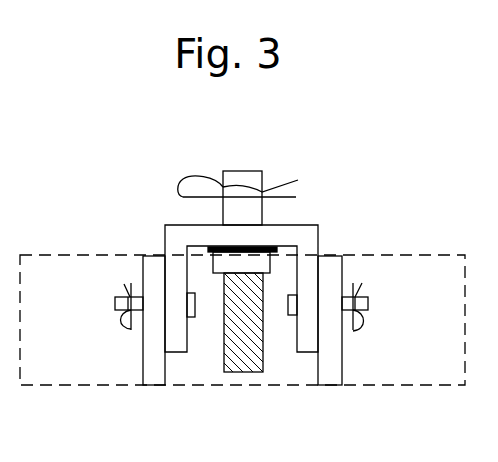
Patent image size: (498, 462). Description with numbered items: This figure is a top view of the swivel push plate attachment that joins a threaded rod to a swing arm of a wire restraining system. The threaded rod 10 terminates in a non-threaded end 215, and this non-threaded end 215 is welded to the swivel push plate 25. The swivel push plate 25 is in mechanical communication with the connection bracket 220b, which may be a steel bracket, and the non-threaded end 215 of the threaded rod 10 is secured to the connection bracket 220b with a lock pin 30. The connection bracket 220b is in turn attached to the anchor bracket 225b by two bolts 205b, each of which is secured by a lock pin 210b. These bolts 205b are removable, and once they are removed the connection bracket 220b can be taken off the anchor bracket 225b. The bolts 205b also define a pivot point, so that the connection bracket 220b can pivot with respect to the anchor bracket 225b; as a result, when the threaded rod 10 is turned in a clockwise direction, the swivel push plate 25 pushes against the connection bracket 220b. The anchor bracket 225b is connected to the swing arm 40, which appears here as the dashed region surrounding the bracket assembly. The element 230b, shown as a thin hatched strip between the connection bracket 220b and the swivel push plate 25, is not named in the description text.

The threaded rod 10 is at (253, 360).
The swivel push plate 25 is at (220, 272).
The lock pin 30 is at (178, 182).
The swing arm 40 is at (398, 379).
The bolts 205b is at (115, 302).
The lock pins 210b is at (120, 327).
The non-threaded end 215 is at (243, 178).
The connection bracket 220b is at (205, 233).
The anchor bracket 225b is at (155, 360).
The hatched strip / gasket 230b is at (275, 247).